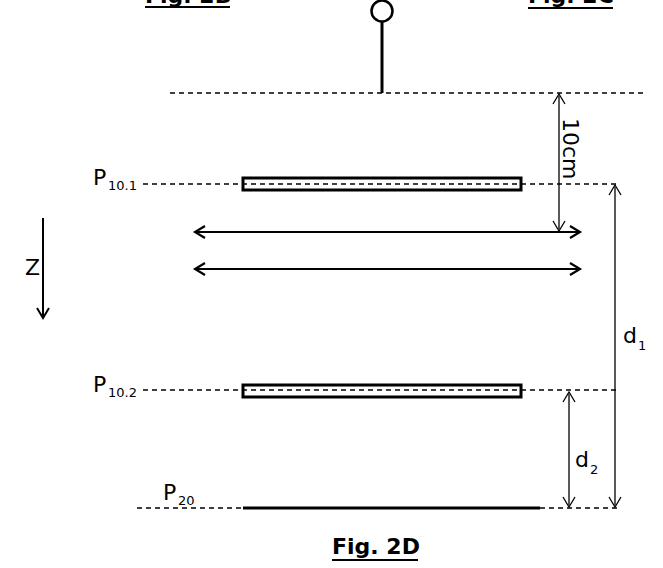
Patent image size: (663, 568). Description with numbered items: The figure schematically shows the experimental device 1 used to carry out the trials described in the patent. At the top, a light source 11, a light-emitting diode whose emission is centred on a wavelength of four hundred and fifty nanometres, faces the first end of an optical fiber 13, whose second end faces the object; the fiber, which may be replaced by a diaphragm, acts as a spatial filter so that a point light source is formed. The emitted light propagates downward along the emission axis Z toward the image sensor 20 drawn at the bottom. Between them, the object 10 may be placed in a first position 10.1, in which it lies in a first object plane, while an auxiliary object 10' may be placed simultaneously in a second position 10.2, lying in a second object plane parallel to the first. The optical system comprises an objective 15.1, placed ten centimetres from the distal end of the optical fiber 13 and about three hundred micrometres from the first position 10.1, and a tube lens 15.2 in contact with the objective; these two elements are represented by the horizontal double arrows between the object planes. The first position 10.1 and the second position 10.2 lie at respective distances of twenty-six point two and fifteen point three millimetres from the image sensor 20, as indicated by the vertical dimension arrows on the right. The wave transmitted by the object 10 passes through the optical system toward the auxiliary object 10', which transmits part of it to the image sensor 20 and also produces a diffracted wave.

The measuring arrangement 1 is at (102, 125).
The object 10 is at (391, 165).
The auxiliary object 10' is at (395, 369).
The first position 10.1 is at (240, 178).
The second position 10.2 is at (236, 390).
The light source 11 is at (362, 12).
The optical fiber 13 is at (368, 63).
The objective 15.1 is at (183, 231).
The tube lens 15.2 is at (183, 268).
The image sensor 20 is at (446, 508).